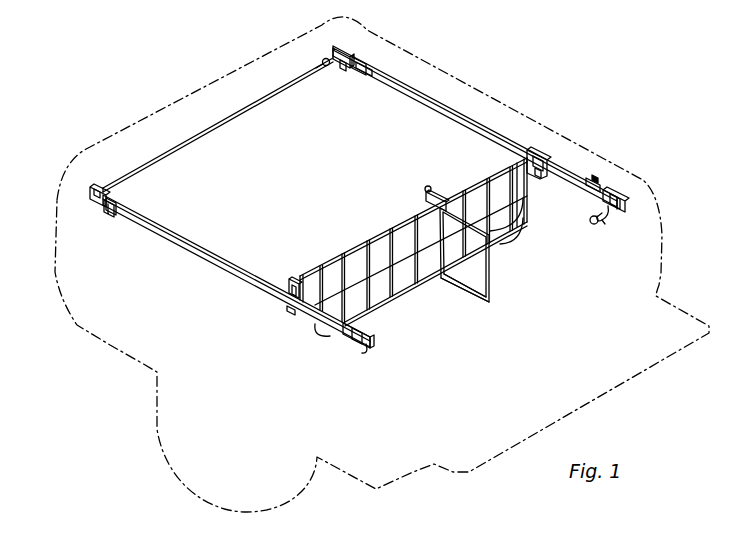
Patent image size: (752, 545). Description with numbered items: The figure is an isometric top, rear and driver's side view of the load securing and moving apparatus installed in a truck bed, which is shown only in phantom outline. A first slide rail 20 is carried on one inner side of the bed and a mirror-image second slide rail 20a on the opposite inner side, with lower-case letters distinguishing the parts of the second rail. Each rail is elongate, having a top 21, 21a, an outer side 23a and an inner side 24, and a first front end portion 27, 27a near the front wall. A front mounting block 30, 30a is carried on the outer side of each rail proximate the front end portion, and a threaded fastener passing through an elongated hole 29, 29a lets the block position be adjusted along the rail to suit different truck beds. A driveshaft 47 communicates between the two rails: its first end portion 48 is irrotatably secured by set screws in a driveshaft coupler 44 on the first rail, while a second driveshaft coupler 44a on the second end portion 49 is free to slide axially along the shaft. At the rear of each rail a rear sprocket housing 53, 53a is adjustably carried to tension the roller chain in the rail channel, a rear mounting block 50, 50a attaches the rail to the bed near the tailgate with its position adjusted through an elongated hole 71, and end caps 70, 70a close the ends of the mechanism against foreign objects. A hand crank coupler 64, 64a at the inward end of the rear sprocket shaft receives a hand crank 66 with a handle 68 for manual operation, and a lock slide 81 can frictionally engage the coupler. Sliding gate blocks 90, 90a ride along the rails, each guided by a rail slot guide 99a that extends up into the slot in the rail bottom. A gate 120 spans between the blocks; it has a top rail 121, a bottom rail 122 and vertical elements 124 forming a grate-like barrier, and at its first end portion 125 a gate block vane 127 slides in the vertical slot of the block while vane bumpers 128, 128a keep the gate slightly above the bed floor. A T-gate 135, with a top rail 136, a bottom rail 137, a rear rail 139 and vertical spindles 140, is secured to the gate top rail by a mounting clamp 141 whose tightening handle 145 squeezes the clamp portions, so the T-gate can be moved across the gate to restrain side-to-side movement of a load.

The first slide rail 20 is at (442, 100).
The top 21 is at (406, 84).
The inner side 24 is at (388, 83).
The second slide rail 20a is at (233, 281).
The top of second slide rail 21a is at (168, 228).
The outer side of second slide rail 23a is at (185, 245).
The driveshaft 47 is at (222, 120).
The second end portion of driveshaft 49 is at (105, 187).
The first front end portion 27 is at (332, 48).
The elongated hole 29 is at (358, 52).
The front mounting block 30 is at (364, 56).
The driveshaft coupler 44 is at (334, 68).
The first end portion of driveshaft 48 is at (326, 66).
The first front end portion of second slide rail 27a is at (92, 188).
The elongated hole of second slide rail 29a is at (117, 208).
The front mounting block of second slide rail 30a is at (107, 214).
The second driveshaft coupler 44a is at (100, 189).
The rear mounting block 50 is at (606, 188).
The rear sprocket housing 53 is at (614, 196).
The end cap 70 is at (622, 200).
The hand crank coupler 64 is at (611, 208).
The hand crank 66 is at (606, 222).
The handle 68 is at (594, 225).
The elongated hole 71 is at (590, 181).
The lock slide 81 is at (595, 176).
The rear mounting block of second slide rail 50a is at (343, 338).
The rear sprocket housing of second slide rail 53a is at (358, 345).
The hand crank coupler of second slide rail 64a is at (370, 343).
The end cap of second slide rail 70a is at (374, 348).
The rail slot guide 99a is at (290, 311).
The gate 120 is at (438, 233).
The top rail 121 is at (469, 187).
The bottom rail 122 is at (383, 311).
The vertical elements 124 is at (345, 253).
The first end portion 125 is at (526, 210).
The vane bumper of second end 128a is at (290, 278).
The sliding gate block of second slide rail 90a is at (299, 282).
The vane bumper 128 is at (531, 148).
The sliding gate block 90 is at (543, 156).
The gate block vane 127 is at (534, 175).
The top rail of T-gate 136 is at (496, 239).
The T-gate 135 is at (508, 297).
The rear rail of T-gate 139 is at (500, 272).
The vertical spindles 140 is at (447, 280).
The bottom rail of T-gate 137 is at (470, 303).
The tightening handle 145 is at (438, 197).
The mounting clamp 141 is at (427, 183).